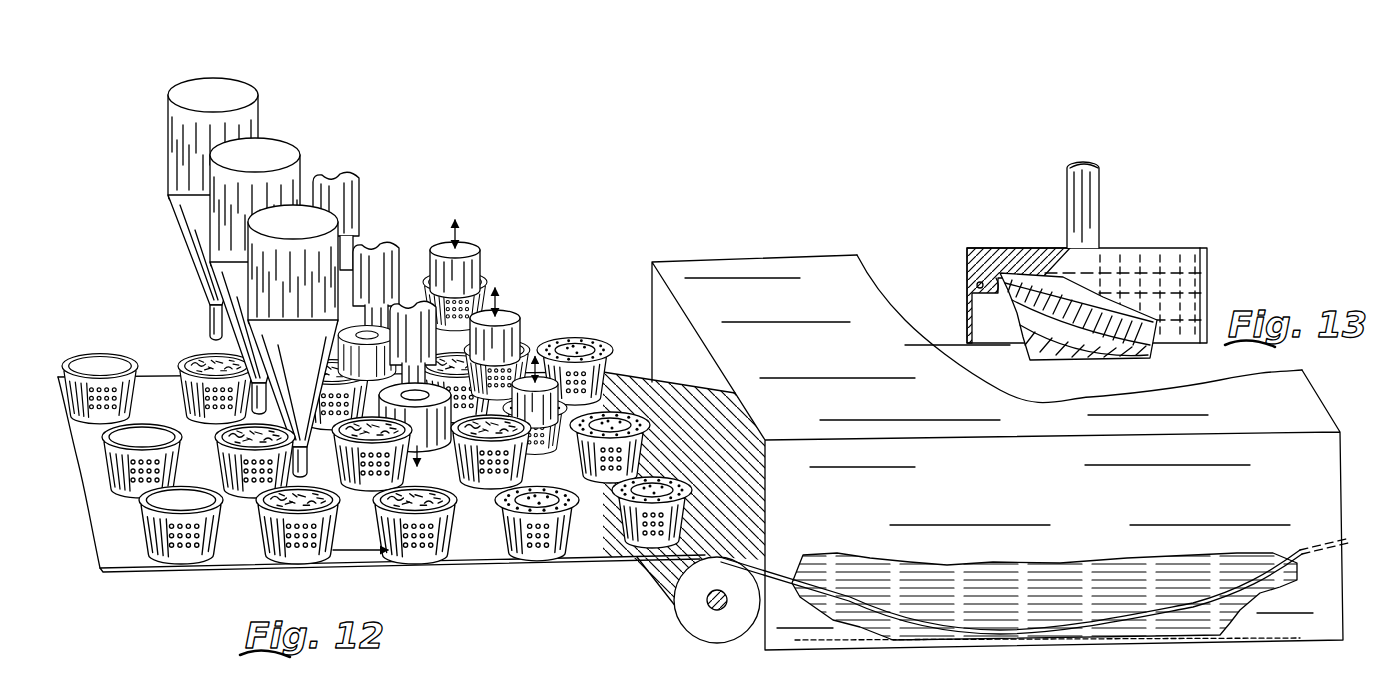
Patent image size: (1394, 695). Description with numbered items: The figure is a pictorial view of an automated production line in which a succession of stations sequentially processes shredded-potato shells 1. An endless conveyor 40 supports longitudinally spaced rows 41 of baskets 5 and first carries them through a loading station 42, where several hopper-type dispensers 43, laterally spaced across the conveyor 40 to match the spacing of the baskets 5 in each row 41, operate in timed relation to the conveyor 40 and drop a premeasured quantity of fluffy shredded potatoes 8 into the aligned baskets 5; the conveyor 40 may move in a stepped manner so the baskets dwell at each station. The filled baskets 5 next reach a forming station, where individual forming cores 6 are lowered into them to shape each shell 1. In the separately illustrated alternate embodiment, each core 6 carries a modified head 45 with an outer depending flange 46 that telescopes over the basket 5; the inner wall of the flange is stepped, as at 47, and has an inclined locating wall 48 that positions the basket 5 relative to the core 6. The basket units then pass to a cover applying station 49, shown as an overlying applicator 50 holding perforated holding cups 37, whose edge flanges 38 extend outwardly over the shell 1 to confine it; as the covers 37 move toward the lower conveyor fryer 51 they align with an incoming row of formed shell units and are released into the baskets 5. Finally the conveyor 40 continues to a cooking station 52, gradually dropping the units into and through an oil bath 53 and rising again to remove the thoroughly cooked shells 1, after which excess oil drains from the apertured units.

In FIG. 12, the shell 1 is at (570, 491).
In FIG. 12, the basket 5 is at (419, 531).
In FIG. 12, the forming core 6 is at (345, 414).
In FIG. 13, the forming core 6 is at (1152, 350).
In FIG. 12, the shredded potatoes 8 is at (328, 497).
In FIG. 12, the holding cup 37 is at (656, 506).
In FIG. 12, the edge flange 38 is at (686, 493).
In FIG. 12, the endless conveyor 40 is at (110, 567).
In FIG. 12, the rows 41 is at (173, 550).
In FIG. 12, the loading station 42 is at (232, 277).
In FIG. 12, the hopper-type dispenser 43 is at (263, 277).
In FIG. 13, the modified head 45 is at (1066, 273).
In FIG. 13, the outer depending flange 46 is at (968, 311).
In FIG. 13, the step 47 is at (997, 274).
In FIG. 13, the inclined locating wall 48 is at (977, 286).
In FIG. 12, the cover applying station 49 is at (540, 549).
In FIG. 12, the applicator 50 is at (479, 268).
In FIG. 12, the lower conveyor fryer 51 is at (598, 336).
In FIG. 12, the cooking station 52 is at (1260, 643).
In FIG. 12, the oil bath 53 is at (1048, 601).